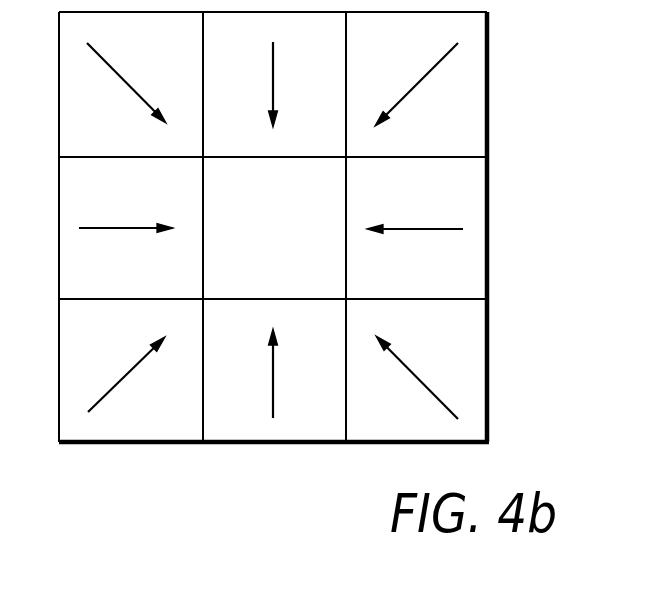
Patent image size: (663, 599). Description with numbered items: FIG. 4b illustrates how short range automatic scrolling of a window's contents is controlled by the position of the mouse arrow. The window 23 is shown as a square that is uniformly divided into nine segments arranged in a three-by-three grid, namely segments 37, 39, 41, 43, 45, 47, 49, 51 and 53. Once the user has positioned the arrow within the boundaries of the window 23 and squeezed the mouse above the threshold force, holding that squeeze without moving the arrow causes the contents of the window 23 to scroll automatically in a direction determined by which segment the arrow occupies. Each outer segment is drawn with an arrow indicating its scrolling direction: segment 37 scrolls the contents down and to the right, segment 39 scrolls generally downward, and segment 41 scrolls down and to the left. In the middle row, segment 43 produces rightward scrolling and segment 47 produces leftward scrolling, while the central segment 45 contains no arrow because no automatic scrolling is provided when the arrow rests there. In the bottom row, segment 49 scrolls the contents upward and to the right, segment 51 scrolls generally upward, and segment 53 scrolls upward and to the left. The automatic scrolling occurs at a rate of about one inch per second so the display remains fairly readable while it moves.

The window 23 is at (489, 118).
The segment 37 is at (137, 54).
The segment 39 is at (294, 54).
The segment 41 is at (392, 54).
The segment 43 is at (137, 204).
The central segment 45 is at (275, 204).
The segment 47 is at (419, 204).
The segment 49 is at (116, 335).
The segment 51 is at (295, 337).
The segment 53 is at (423, 335).